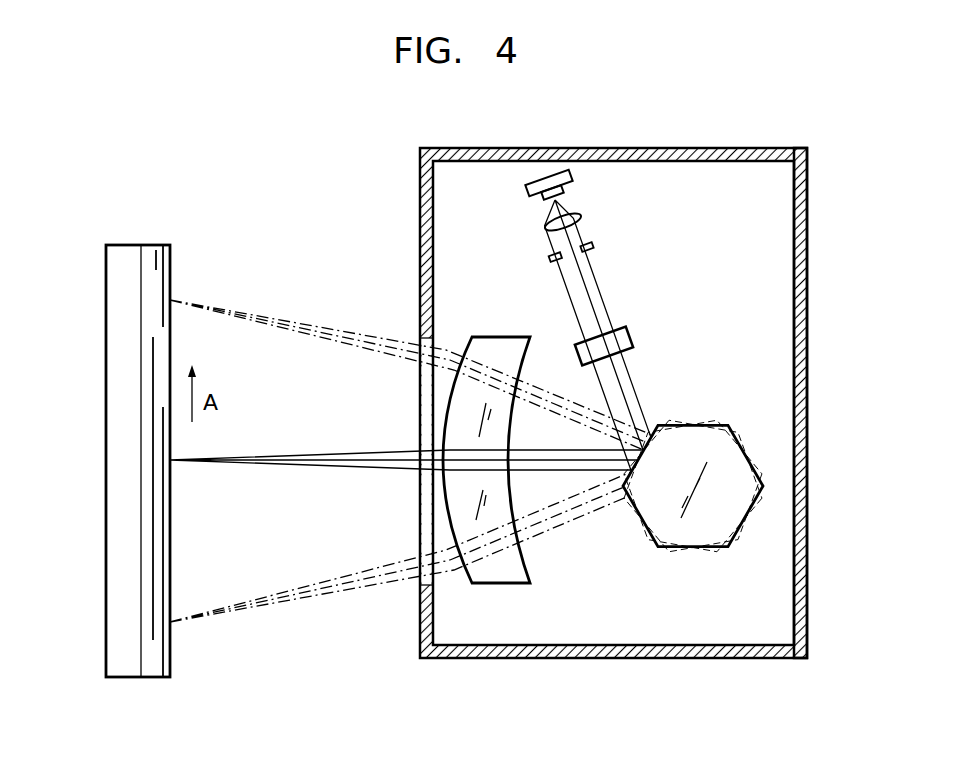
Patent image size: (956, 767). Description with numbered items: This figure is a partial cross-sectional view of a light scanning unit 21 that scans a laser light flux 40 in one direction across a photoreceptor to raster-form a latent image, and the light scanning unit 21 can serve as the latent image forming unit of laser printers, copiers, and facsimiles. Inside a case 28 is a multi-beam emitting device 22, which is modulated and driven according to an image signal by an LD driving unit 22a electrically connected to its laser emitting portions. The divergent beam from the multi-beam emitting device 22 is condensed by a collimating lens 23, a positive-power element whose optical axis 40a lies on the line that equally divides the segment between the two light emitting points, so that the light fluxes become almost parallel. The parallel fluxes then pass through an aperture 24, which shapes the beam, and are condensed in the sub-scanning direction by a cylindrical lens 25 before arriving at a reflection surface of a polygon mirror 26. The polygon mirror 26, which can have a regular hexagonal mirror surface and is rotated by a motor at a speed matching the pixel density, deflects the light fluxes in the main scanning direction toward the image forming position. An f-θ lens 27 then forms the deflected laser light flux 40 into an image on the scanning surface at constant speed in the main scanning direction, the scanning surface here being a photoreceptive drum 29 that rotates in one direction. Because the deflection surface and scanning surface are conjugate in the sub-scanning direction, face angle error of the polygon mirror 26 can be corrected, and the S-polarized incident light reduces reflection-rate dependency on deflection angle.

The light scanning unit 21 is at (417, 197).
The multi-beam emitting device 22 is at (589, 207).
The LD driving unit 22a is at (573, 178).
The collimating lens 23 is at (582, 218).
The aperture 24 is at (594, 247).
The cylindrical lens 25 is at (628, 340).
The polygon mirror 26 is at (757, 470).
The f-θ lens 27 is at (527, 566).
The case 28 is at (800, 358).
The photoreceptive drum 29 is at (106, 370).
The laser light flux 40 is at (411, 461).
The optical axis 40a is at (303, 462).